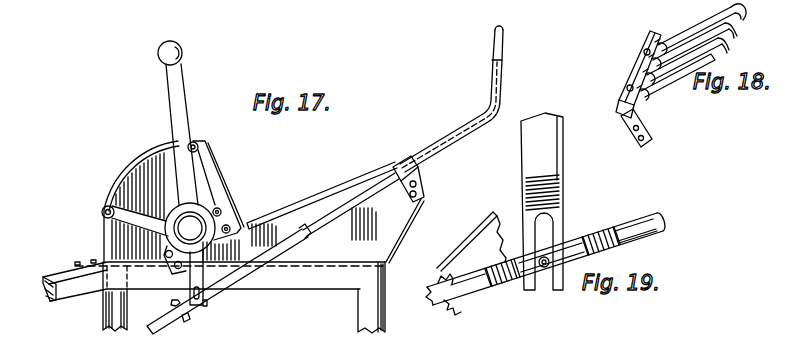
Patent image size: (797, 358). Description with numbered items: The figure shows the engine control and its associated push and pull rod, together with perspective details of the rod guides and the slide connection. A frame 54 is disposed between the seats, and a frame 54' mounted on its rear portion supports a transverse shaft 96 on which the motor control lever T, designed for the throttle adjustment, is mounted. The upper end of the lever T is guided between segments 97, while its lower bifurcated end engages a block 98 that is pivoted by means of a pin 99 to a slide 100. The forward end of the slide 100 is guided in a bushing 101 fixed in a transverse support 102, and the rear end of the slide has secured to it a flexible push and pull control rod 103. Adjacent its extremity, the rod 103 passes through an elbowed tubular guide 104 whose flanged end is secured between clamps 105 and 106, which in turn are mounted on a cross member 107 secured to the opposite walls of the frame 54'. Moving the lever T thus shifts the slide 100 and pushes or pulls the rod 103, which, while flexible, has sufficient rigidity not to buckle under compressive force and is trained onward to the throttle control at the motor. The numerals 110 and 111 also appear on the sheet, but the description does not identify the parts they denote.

In FIG. 17, the throttle control lever T is at (182, 51).
In FIG. 17, the frame 54 is at (214, 270).
In FIG. 17, the frame 54' is at (322, 195).
In FIG. 17, the transverse shaft 96 is at (198, 217).
In FIG. 17, the segments 97 is at (143, 157).
In FIG. 19, the blocks 98 is at (543, 277).
In FIG. 19, the pins 99 is at (548, 258).
In FIG. 17, the slides 100 is at (250, 266).
In FIG. 19, the slides 100 is at (634, 219).
In FIG. 17, the bushings 101 is at (173, 303).
In FIG. 19, the bushings 101 is at (441, 312).
In FIG. 17, the transverse support 102 is at (187, 322).
In FIG. 19, the transverse support 102 is at (472, 243).
In FIG. 17, the flexible push and pull control rods 103 is at (333, 217).
In FIG. 17, the elbowed tubular guides 104 is at (504, 76).
In FIG. 18, the elbowed tubular guides 104 is at (672, 88).
In FIG. 18, the clamp 105 is at (621, 100).
In FIG. 18, the clamp 106 is at (634, 127).
In FIG. 17, the cross member 107 is at (424, 186).
In FIG. 18, the cross member 107 is at (645, 103).
In FIG. 19, the member 110 is at (480, 349).
In FIG. 19, the member 111 is at (532, 349).